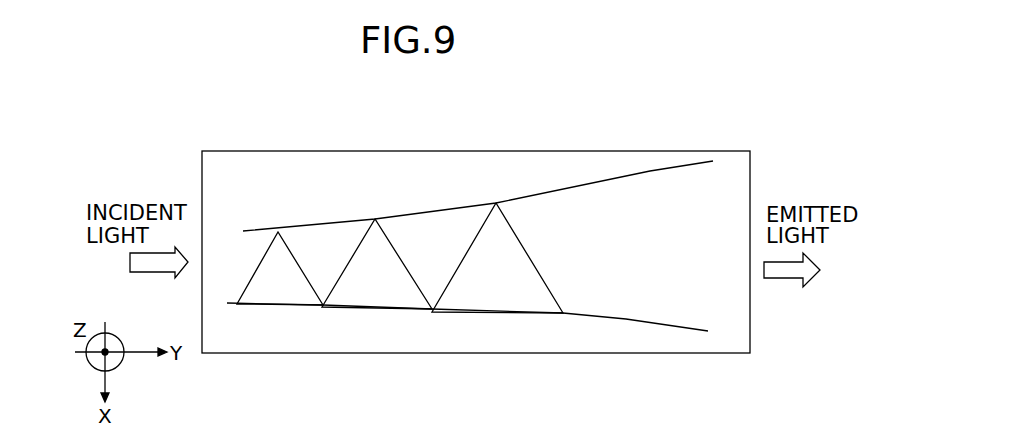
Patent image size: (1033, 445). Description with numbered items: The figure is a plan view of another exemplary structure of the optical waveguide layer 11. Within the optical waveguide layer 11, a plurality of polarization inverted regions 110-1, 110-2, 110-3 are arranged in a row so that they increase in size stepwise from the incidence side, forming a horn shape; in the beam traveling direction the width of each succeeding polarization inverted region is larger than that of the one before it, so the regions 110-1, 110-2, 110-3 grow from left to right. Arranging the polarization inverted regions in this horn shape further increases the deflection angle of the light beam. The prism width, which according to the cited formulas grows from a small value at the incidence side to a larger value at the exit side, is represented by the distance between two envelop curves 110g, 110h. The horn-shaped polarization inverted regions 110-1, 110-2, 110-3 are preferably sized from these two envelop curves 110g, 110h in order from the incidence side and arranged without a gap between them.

The optical waveguide layer 11 is at (450, 367).
The polarization inverted region 110-1 is at (297, 240).
The polarization inverted region 110-2 is at (387, 228).
The polarization inverted region 110-3 is at (513, 218).
The envelop curve 110g is at (650, 170).
The envelop curve 110h is at (626, 318).